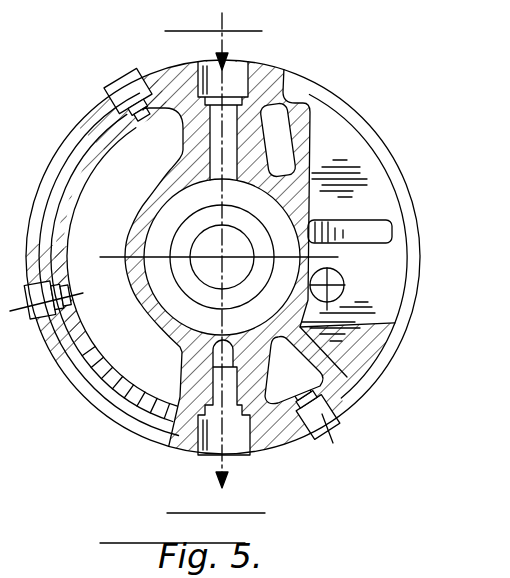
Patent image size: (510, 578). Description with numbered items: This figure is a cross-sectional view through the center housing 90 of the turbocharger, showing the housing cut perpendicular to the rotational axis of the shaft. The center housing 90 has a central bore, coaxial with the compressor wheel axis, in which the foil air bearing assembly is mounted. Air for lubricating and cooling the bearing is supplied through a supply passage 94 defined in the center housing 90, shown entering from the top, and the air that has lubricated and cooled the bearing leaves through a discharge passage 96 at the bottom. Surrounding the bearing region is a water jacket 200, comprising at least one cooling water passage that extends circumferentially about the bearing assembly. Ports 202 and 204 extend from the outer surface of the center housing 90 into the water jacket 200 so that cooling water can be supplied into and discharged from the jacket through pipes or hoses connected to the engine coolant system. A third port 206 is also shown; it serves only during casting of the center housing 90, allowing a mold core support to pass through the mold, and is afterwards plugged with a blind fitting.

The center housing 90 is at (329, 49).
The supply passage 94 is at (232, 70).
The discharge passage 96 is at (247, 458).
The water jacket 200 is at (94, 176).
The port 202 is at (133, 82).
The port 204 is at (333, 421).
The third port 206 is at (30, 318).